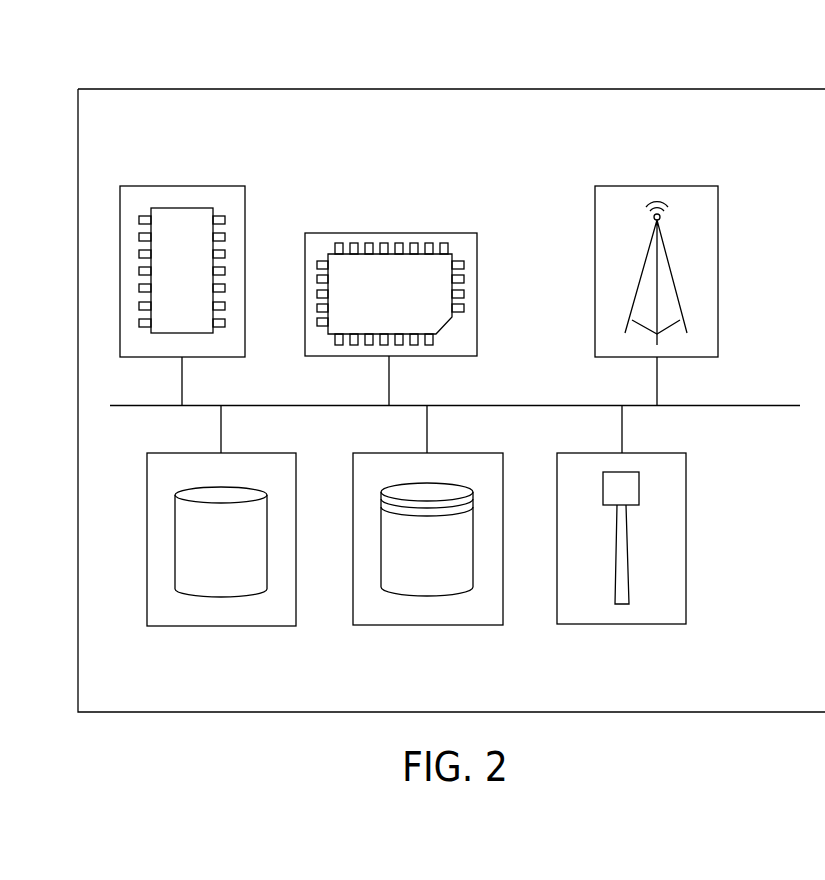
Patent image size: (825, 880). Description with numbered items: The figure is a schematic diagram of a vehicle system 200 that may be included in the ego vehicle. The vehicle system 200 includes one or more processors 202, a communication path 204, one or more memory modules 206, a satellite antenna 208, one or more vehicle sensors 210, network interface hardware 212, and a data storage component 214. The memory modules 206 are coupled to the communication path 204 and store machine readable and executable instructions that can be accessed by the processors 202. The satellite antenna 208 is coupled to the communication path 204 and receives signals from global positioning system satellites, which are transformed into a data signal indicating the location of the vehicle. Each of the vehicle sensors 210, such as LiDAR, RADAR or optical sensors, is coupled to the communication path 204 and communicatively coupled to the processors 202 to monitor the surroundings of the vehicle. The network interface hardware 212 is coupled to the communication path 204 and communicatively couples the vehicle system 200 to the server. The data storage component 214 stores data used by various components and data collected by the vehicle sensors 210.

The vehicle system 200 is at (748, 89).
The processors 202 is at (182, 186).
The communication path 204 is at (747, 405).
The memory modules 206 is at (389, 233).
The satellite antenna 208 is at (622, 624).
The vehicle sensors 210 is at (221, 626).
The network interface hardware 212 is at (657, 186).
The data storage component 214 is at (427, 625).